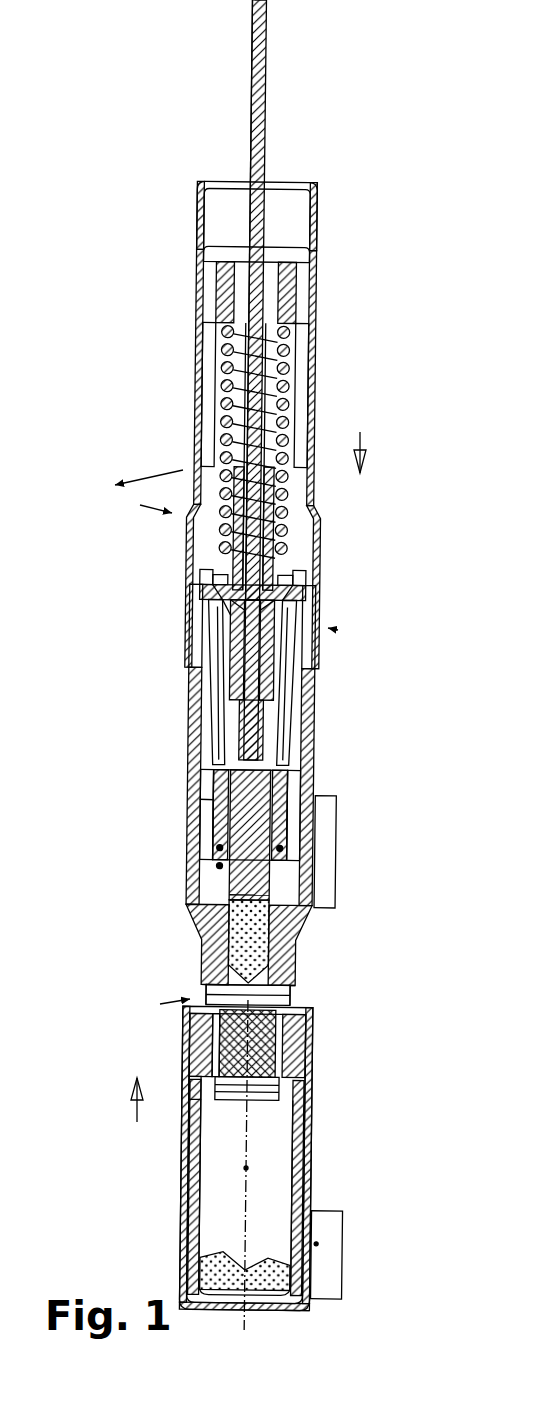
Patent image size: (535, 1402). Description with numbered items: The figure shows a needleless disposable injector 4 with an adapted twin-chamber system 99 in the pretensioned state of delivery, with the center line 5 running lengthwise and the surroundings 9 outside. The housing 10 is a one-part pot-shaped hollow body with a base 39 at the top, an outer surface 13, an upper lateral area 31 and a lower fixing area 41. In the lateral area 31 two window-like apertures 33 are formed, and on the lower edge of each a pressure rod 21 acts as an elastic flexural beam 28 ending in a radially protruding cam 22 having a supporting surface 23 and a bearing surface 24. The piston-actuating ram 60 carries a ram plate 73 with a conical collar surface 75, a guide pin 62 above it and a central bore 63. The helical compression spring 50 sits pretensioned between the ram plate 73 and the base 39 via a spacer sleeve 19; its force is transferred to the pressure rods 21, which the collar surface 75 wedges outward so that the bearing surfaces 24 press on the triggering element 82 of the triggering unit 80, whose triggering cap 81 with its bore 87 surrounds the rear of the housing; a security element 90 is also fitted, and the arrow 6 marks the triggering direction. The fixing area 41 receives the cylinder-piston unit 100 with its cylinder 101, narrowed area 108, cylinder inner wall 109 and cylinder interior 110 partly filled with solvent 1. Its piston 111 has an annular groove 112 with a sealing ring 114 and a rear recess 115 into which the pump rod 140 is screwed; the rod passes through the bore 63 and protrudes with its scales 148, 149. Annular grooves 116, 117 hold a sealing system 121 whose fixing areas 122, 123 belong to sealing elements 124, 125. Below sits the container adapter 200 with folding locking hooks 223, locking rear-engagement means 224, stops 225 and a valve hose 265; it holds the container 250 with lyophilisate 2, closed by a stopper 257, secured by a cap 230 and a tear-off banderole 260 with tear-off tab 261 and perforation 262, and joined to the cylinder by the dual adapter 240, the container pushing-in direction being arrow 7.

The solvent 1 is at (235, 945).
The lyophilisate 2 is at (213, 1262).
The disposable injector 4 is at (140, 505).
The center line 5 is at (245, 1168).
The triggering movement direction 6 is at (361, 448).
The container pushing-in direction 7 is at (136, 1104).
The surroundings 9 is at (183, 470).
The housing 10 is at (300, 404).
The outer surface 13 is at (315, 352).
The spacer sleeve 19 is at (227, 285).
The pressure rods 21 is at (297, 675).
The cams 22 is at (302, 612).
The supporting surface 23 is at (255, 600).
The bearing surface 24 is at (245, 600).
The flexural beam 28 is at (212, 687).
The lateral area 31 is at (195, 354).
The apertures 33 is at (323, 520).
The base 39 is at (272, 257).
The fixing area 41 is at (185, 812).
The helical compression spring 50 is at (290, 478).
The piston-actuating ram 60 is at (290, 587).
The guide pin 62 is at (295, 567).
The bore 63 is at (218, 585).
The ram plate 73 is at (232, 598).
The collar surface 75 is at (240, 608).
The triggering unit 80 is at (338, 630).
The triggering cap 81 is at (315, 336).
The triggering element 82 is at (315, 697).
The bore 87 is at (250, 187).
The security element 90 is at (320, 829).
The twin-chamber system 99 is at (160, 1004).
The cylinder-piston unit 100 is at (297, 937).
The cylinder 101 is at (278, 988).
The narrowed area 108 is at (200, 800).
The cylinder inner wall 109 is at (268, 915).
The cylinder interior 110 is at (290, 960).
The piston 111 is at (260, 870).
The annular groove 112 is at (255, 895).
The sealing ring 114 is at (240, 910).
The recess 115 is at (262, 735).
The annular groove 116 is at (222, 848).
The annular groove 117 is at (212, 792).
The sealing system 121 is at (292, 778).
The first fixing area 122 is at (222, 866).
The second fixing area 123 is at (215, 780).
The sealing element 124 is at (285, 852).
The sealing element 125 is at (318, 797).
The pump rod 140 is at (222, 443).
The scale 148 is at (252, 143).
The scale 149 is at (265, 133).
The container adapter 200 is at (320, 1040).
The folding locking hooks 223 is at (183, 1102).
The locking rear-engagement means 224 is at (283, 1062).
The stops 225 is at (215, 1035).
The cap 230 is at (185, 1228).
The dual adapter 240 is at (290, 1078).
The container 250 is at (305, 1178).
The stopper 257 is at (283, 1105).
The tear-off banderole 260 is at (347, 1222).
The tear-off tab 261 is at (323, 1244).
The perforation 262 is at (312, 1287).
The valve hose 265 is at (210, 1056).